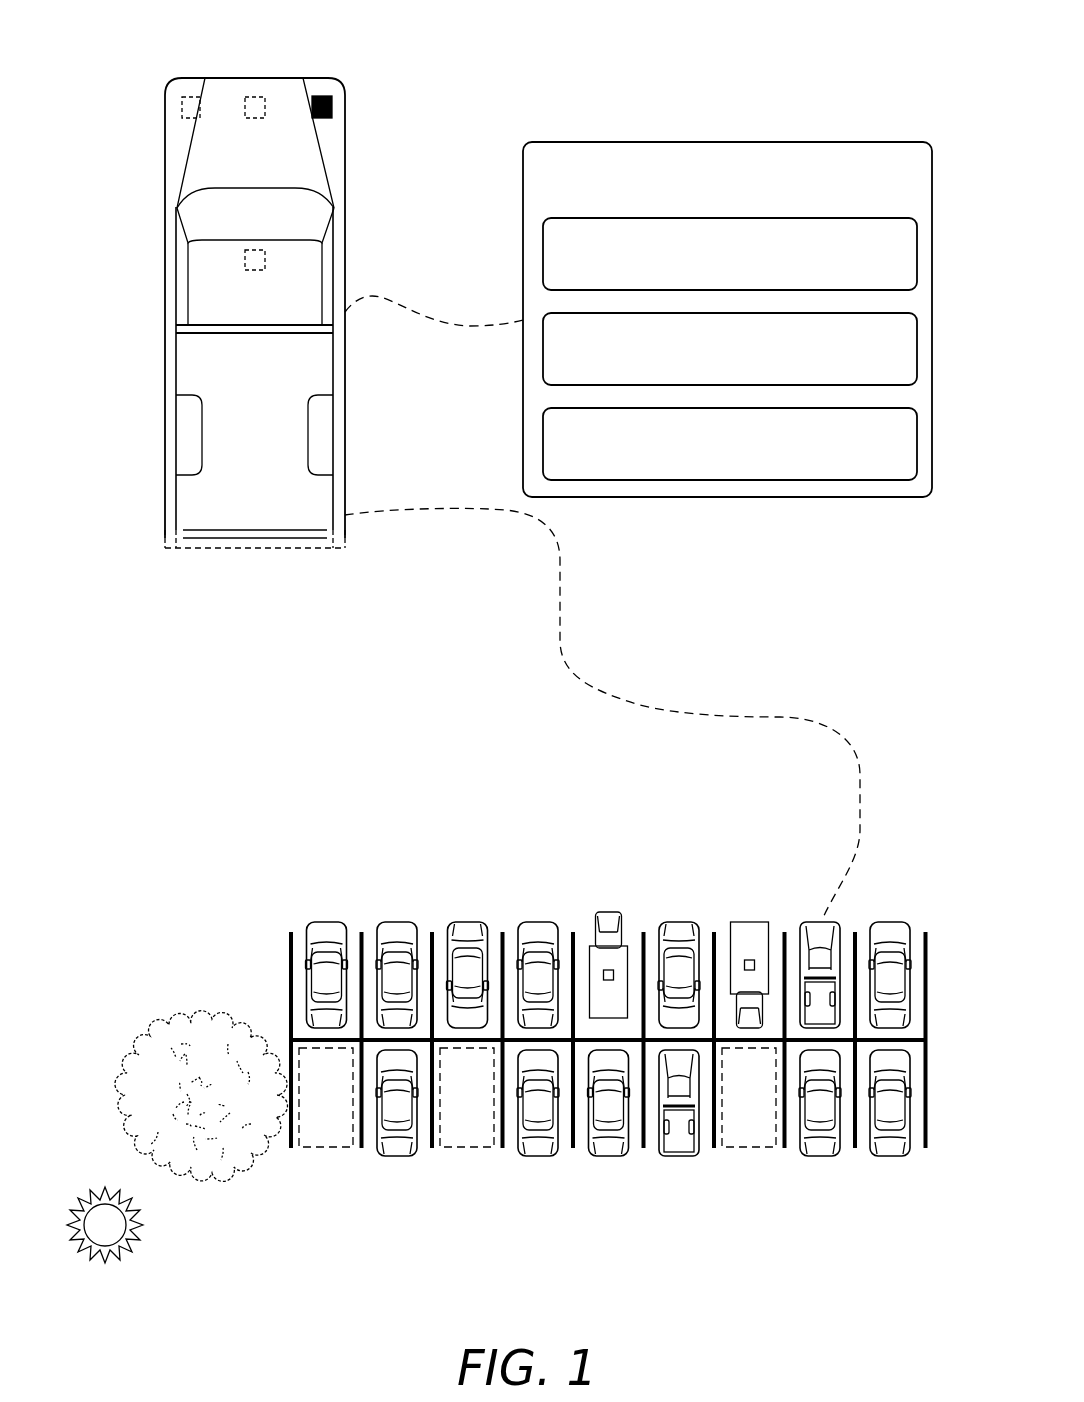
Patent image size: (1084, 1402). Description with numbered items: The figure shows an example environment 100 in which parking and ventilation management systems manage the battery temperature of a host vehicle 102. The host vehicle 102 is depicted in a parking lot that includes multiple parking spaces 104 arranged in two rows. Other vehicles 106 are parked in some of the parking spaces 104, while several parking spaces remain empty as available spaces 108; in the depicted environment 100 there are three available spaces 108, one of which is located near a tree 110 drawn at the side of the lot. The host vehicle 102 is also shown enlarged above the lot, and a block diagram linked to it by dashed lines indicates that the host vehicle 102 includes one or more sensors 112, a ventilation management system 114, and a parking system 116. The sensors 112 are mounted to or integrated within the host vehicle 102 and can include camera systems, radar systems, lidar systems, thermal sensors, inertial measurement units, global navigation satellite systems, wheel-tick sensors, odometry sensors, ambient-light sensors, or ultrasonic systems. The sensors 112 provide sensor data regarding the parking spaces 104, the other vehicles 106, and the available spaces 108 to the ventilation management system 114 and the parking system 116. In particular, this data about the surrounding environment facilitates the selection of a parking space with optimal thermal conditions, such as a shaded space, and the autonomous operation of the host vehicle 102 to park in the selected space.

The environment 100 is at (177, 868).
The host vehicle 102 is at (820, 920).
The parking spaces 104 is at (643, 1162).
The other vehicles 106 is at (625, 865).
The available spaces 108 is at (325, 1147).
The tree 110 is at (179, 1176).
The sensors 112 is at (322, 97).
The ventilation management system 114 is at (730, 349).
The parking system 116 is at (730, 444).